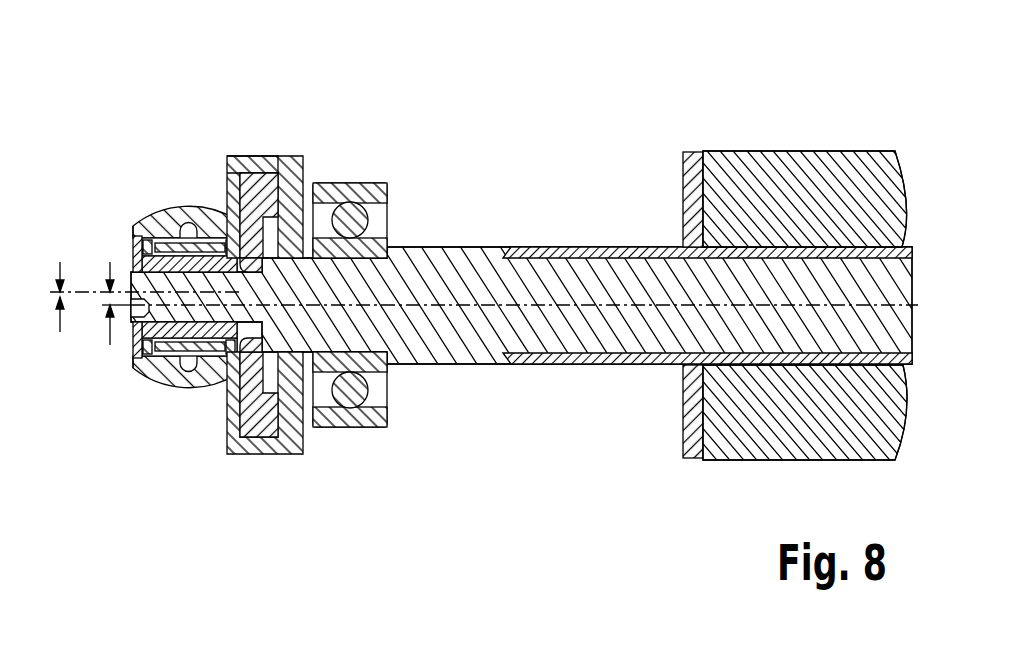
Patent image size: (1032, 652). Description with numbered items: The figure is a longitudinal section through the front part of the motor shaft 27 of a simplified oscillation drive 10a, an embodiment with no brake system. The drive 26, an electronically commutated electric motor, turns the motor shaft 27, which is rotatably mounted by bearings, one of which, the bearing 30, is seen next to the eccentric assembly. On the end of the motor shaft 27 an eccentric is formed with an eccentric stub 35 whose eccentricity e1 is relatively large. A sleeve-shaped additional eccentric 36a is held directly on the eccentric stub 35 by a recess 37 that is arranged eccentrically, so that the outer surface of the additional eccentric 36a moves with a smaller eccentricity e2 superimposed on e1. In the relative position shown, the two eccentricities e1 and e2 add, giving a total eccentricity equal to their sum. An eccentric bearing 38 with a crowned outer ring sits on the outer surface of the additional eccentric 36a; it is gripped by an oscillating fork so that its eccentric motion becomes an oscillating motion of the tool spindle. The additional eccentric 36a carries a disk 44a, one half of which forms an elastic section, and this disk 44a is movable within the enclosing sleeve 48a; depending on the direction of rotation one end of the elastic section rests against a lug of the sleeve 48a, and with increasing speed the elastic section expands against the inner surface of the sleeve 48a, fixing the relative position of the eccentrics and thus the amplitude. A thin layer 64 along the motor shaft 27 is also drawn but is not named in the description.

The oscillation drive 10a is at (656, 115).
The drive 26 is at (831, 133).
The motor shaft 27 is at (618, 280).
The bearing 30 is at (387, 195).
The eccentric stub 35 is at (186, 322).
The additional eccentric 36a is at (243, 155).
The recess 37 is at (133, 240).
The eccentric bearing 38 is at (184, 203).
The disk 44a is at (258, 185).
The sleeve 48a is at (290, 172).
The sleeve 64 is at (547, 305).
The eccentricity of the eccentric pin e1 is at (98, 305).
The eccentricity of the additional eccentric e2 is at (47, 287).